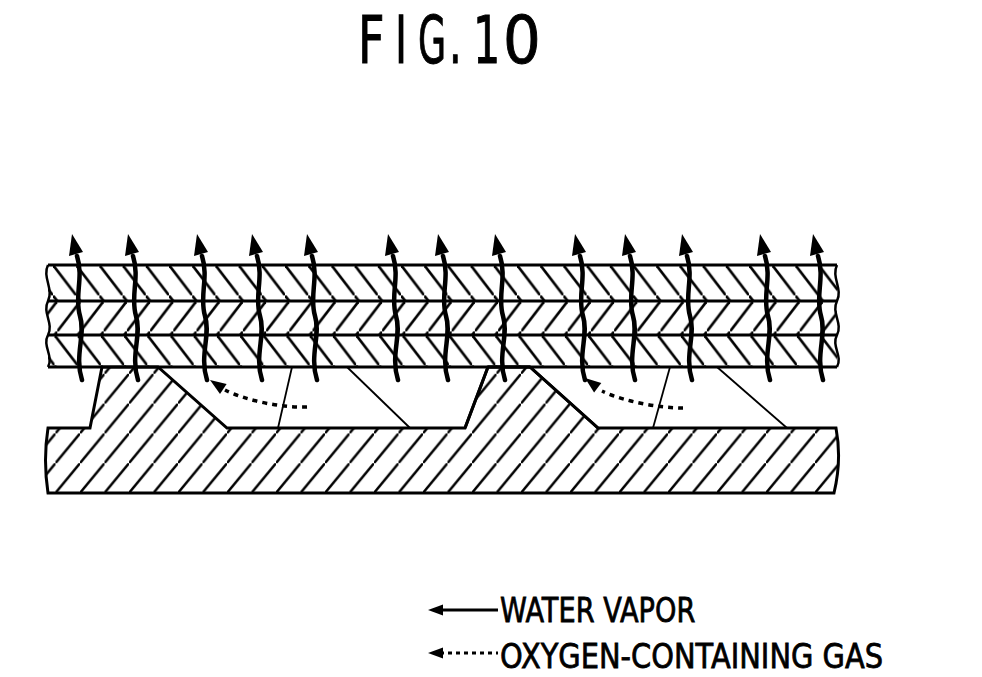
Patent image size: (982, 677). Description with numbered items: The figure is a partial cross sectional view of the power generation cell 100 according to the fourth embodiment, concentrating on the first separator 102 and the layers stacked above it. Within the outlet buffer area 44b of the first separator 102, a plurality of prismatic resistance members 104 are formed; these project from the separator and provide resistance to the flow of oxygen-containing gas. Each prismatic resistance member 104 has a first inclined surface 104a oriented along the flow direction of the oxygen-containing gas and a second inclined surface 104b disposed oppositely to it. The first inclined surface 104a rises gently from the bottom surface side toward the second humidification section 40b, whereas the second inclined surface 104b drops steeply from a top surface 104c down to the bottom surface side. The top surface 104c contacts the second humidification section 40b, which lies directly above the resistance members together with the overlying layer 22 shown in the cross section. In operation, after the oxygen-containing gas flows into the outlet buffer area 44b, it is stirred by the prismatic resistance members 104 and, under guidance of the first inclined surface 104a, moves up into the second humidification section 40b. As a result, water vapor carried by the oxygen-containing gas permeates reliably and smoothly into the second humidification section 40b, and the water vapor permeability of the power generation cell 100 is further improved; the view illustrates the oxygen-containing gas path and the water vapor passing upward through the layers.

The power generation cell 100 is at (728, 146).
The cathode layer 22 is at (165, 263).
The second humidification section 40b is at (325, 308).
The first separator 102 is at (188, 495).
The prismatic resistance member 104 is at (532, 370).
The first inclined surface 104a is at (578, 403).
The second inclined surface 104b is at (472, 392).
The top surface 104c is at (503, 367).
The outlet buffer area 44b is at (252, 410).